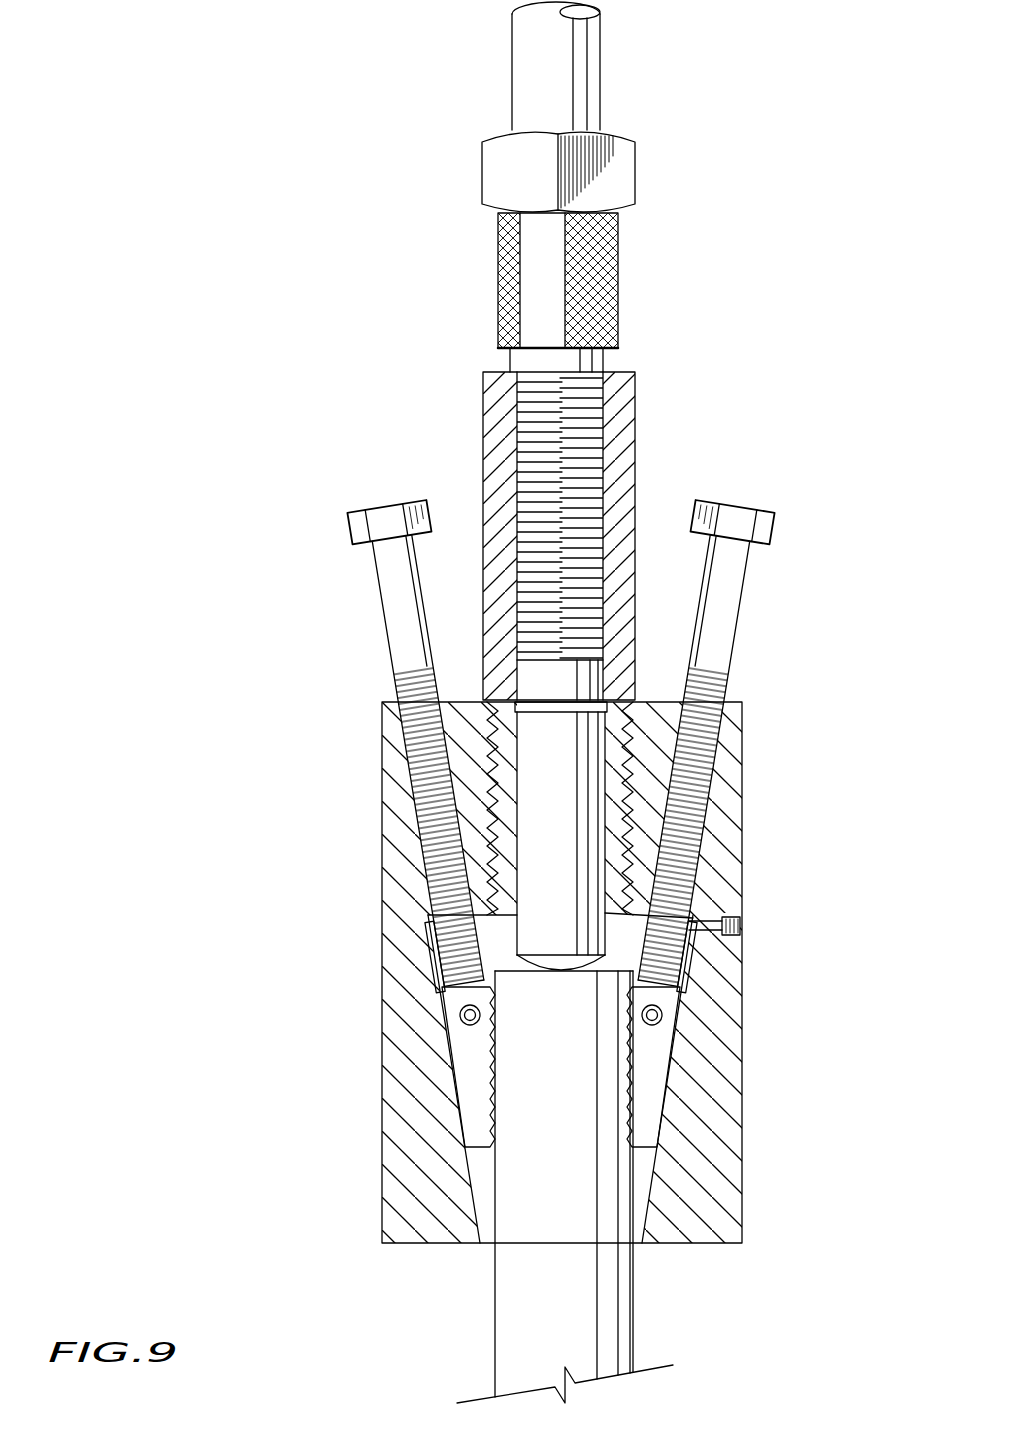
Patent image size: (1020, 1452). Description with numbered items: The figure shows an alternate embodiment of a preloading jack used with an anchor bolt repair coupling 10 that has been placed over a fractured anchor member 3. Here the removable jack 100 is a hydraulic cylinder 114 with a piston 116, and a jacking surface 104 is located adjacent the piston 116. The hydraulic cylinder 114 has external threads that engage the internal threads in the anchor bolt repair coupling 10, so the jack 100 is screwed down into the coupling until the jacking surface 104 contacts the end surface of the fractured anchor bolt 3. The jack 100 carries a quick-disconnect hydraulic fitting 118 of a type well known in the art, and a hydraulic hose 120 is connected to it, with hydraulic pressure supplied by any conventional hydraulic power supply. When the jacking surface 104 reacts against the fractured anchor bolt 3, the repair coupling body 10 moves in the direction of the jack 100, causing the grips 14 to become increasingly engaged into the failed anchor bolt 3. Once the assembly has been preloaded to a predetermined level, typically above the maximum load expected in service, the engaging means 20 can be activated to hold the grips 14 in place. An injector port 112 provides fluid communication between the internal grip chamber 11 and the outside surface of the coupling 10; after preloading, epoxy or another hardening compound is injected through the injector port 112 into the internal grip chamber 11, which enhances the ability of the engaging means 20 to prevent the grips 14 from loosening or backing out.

The hydraulic hose 120 is at (535, 65).
The quick-disconnect hydraulic fitting 118 is at (535, 262).
The hydraulic cylinder 114 is at (515, 430).
The jack 100 is at (635, 405).
The piston 116 is at (540, 820).
The anchor bolt repair coupling 10 is at (382, 862).
The internal grip chamber 11 is at (495, 940).
The engaging means 20 is at (365, 520).
The injector port 112 is at (742, 928).
The grips 14 is at (468, 1100).
The jacking surface 104 is at (563, 970).
The fractured anchor member 3 is at (580, 1302).